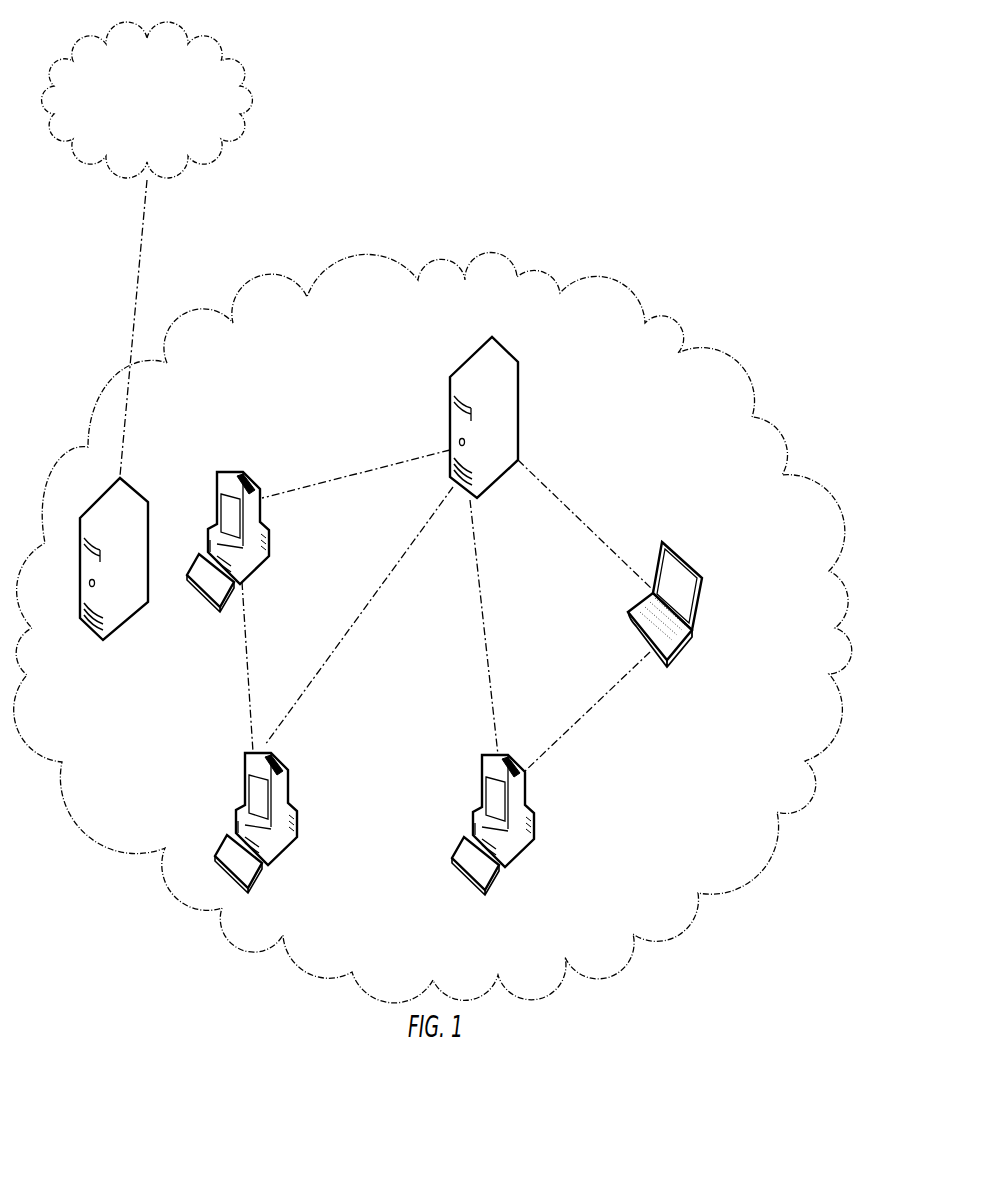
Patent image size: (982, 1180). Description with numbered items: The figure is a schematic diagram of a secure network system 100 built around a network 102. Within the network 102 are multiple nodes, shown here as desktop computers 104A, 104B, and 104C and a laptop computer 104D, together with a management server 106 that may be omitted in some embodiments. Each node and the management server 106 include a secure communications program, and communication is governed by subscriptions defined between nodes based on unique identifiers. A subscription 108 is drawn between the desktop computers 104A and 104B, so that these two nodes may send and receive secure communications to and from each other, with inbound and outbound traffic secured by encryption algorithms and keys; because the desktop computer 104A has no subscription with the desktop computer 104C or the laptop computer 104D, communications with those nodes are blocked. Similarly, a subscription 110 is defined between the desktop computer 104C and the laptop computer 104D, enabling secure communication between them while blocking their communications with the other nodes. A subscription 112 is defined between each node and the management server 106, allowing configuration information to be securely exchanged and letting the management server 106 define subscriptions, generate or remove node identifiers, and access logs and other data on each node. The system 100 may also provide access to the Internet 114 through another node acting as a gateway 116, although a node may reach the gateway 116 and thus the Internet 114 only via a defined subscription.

The secure network system 100 is at (762, 237).
The network 102 is at (592, 273).
The desktop computer 104A is at (268, 528).
The desktop computer 104B is at (283, 770).
The desktop computer 104C is at (532, 820).
The laptop computer 104D is at (675, 543).
The management server 106 is at (520, 417).
The subscription 108 is at (248, 662).
The subscription 110 is at (596, 717).
The subscription 112 is at (358, 468).
The Internet 114 is at (147, 100).
The gateway 116 is at (139, 490).